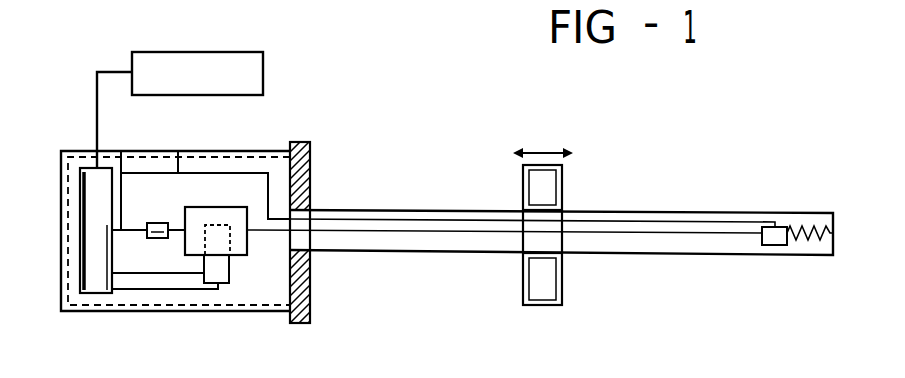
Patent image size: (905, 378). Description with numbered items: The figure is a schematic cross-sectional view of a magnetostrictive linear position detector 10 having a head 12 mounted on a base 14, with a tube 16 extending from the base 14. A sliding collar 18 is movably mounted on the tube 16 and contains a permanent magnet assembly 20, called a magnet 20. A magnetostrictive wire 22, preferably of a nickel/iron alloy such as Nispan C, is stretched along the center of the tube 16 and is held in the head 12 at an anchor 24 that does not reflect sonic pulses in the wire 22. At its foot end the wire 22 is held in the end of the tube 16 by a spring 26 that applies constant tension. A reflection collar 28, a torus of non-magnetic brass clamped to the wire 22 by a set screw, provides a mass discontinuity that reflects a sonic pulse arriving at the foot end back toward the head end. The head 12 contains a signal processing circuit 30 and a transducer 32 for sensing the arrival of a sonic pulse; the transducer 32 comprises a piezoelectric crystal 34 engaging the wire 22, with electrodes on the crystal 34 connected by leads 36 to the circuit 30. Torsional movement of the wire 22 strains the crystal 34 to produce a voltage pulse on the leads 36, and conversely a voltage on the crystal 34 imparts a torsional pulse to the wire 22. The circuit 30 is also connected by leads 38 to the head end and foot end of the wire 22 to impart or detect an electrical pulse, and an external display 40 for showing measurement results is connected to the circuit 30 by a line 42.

The magnetostrictive linear position detector 10 is at (670, 199).
The head 12 is at (72, 148).
The base 14 is at (313, 163).
The tube 16 is at (440, 210).
The sliding collar 18 is at (567, 195).
The permanent magnet assembly 20 is at (542, 277).
The magnetostrictive wire 22 is at (596, 234).
The anchor 24 is at (157, 222).
The spring 26 is at (810, 226).
The reflection collar 28 is at (772, 246).
The signal processing circuit 30 is at (95, 244).
The transducer 32 is at (208, 206).
The piezoelectric crystal 34 is at (229, 278).
The leads 36 is at (160, 275).
The leads 38 is at (178, 152).
The external display 40 is at (263, 75).
The line 42 is at (96, 88).